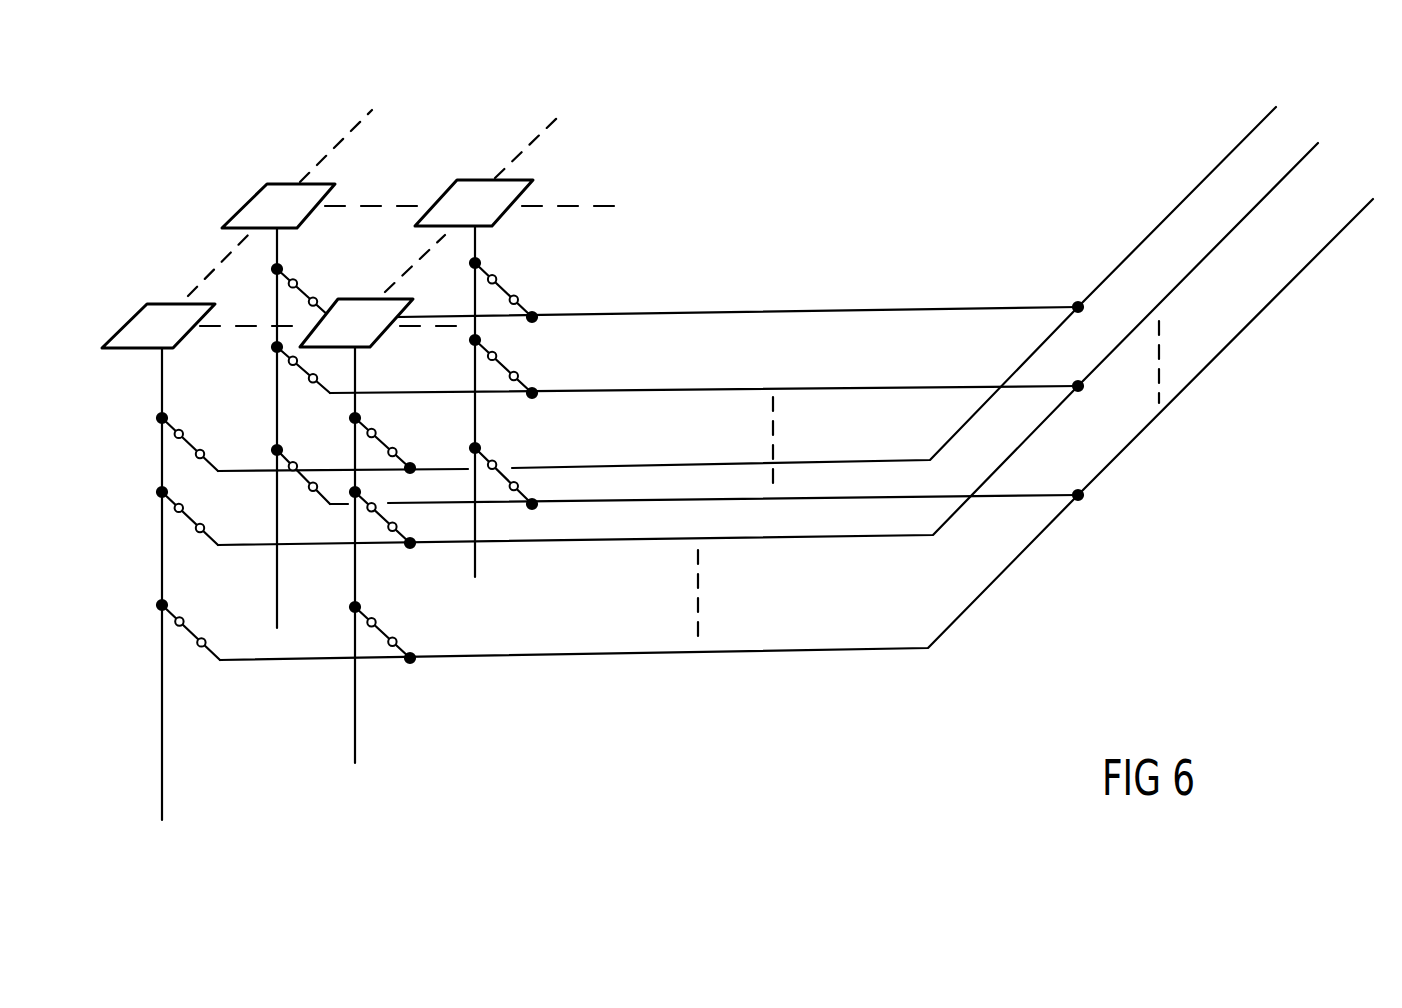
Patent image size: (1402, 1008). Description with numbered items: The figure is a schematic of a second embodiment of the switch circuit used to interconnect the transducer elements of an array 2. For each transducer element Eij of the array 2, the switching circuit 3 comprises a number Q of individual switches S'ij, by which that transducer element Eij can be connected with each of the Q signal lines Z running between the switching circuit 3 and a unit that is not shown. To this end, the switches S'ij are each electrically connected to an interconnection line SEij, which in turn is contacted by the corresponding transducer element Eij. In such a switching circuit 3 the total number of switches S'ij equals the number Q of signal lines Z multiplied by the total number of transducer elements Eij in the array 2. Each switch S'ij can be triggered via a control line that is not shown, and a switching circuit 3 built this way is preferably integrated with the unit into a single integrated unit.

The array 2 is at (297, 183).
The switching circuit 3 is at (417, 492).
The transducer element Eij is at (137, 320).
The interconnection line SEij is at (162, 457).
The switch S'ij is at (347, 460).
The signal line Z is at (1236, 288).